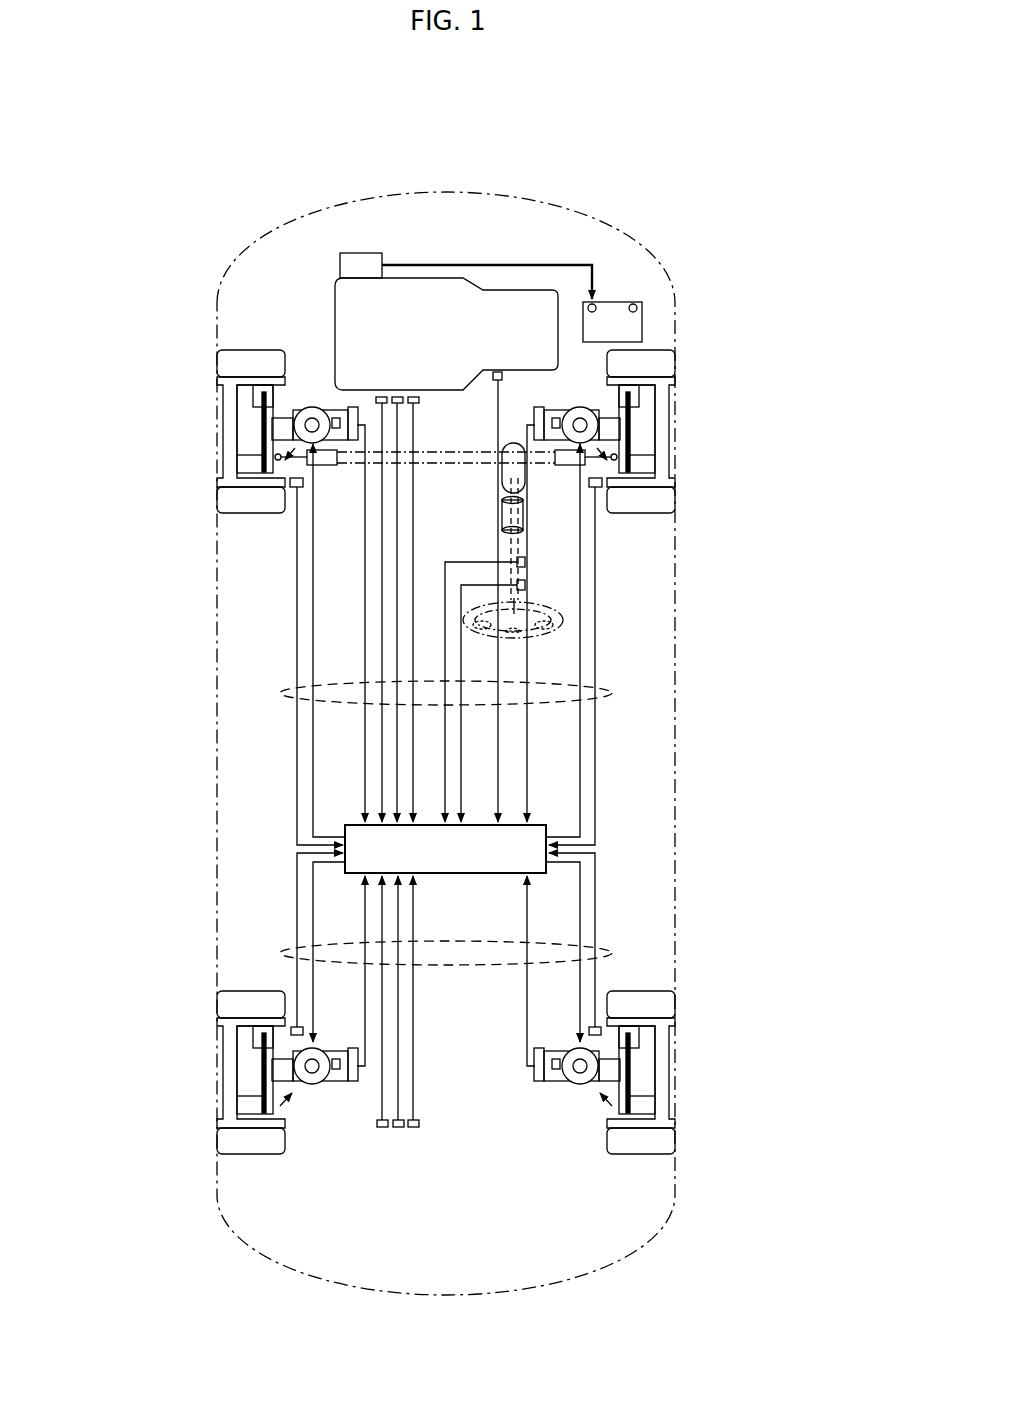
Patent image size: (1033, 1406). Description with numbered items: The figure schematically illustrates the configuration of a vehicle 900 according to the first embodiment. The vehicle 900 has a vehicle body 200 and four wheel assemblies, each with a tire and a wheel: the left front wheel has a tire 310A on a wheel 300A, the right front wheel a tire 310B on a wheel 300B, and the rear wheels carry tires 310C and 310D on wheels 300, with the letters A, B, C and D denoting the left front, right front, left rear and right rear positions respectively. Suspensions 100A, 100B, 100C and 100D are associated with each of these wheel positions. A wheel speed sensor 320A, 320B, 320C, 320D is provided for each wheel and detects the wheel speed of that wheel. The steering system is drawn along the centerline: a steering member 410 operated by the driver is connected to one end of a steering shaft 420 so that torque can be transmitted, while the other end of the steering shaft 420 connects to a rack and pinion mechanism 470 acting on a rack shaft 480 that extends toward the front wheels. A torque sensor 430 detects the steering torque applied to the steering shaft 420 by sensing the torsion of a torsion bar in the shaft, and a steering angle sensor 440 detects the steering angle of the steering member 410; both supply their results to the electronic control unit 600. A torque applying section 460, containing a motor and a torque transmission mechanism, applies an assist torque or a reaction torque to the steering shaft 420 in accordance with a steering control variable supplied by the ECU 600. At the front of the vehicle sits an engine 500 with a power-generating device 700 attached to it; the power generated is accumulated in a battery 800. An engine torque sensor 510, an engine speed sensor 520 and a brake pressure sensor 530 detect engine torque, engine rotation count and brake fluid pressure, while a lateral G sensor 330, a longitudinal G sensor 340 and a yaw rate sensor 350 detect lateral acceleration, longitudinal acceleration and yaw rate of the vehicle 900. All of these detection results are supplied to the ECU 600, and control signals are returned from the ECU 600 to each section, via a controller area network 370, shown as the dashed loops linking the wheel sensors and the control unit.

The vehicle 900 is at (646, 150).
The vehicle body 200 is at (660, 277).
The suspension 100A is at (283, 463).
The suspension 100B is at (609, 463).
The suspension 100C is at (280, 1106).
The suspension 100D is at (612, 1106).
The wheel 300A is at (227, 395).
The wheel 300B is at (665, 395).
The wheels 300 is at (227, 1035).
The tire 310A is at (232, 509).
The tire 310B is at (660, 509).
The tire 310C is at (232, 1150).
The tire 310D is at (660, 1150).
The wheel speed sensor 320A is at (288, 484).
The wheel speed sensor 320B is at (604, 484).
The wheel speed sensor 320C is at (290, 1031).
The wheel speed sensor 320D is at (602, 1031).
The lateral G sensor 330 is at (386, 1127).
The longitudinal G sensor 340 is at (399, 1127).
The yaw rate sensor 350 is at (414, 1128).
The controller area network (CAN) 370 is at (612, 950).
The steering member 410 is at (562, 623).
The steering shaft 420 is at (523, 595).
The torque sensor 430 is at (526, 585).
The steering angle sensor 440 is at (526, 563).
The torque applying section 460 is at (523, 514).
The rack and pinion mechanism 470 is at (502, 470).
The rack shaft 480 is at (436, 452).
The engine 500 is at (335, 327).
The engine torque sensor 510 is at (388, 396).
The engine speed sensor 520 is at (403, 396).
The brake pressure sensor 530 is at (418, 396).
The electronic control unit (ECU) 600 is at (437, 879).
The power-generating device 700 is at (370, 256).
The battery 800 is at (637, 327).